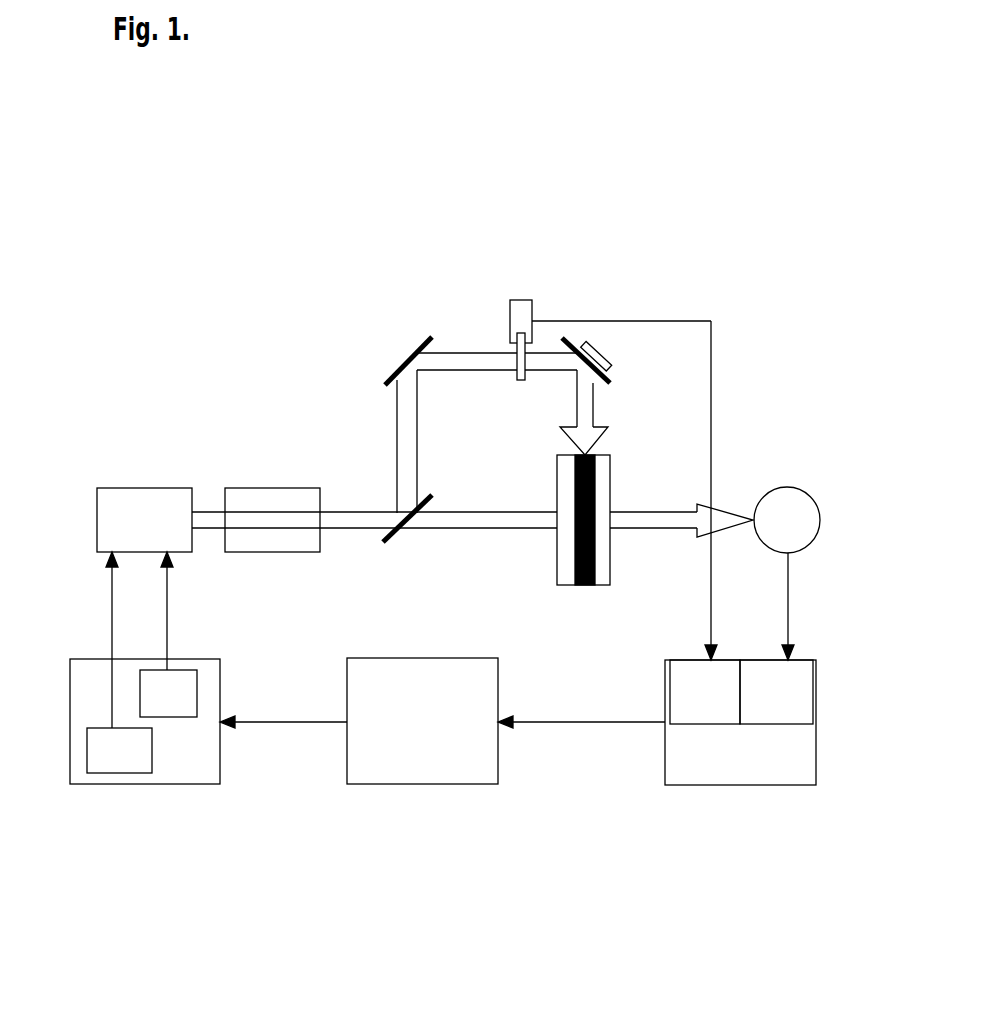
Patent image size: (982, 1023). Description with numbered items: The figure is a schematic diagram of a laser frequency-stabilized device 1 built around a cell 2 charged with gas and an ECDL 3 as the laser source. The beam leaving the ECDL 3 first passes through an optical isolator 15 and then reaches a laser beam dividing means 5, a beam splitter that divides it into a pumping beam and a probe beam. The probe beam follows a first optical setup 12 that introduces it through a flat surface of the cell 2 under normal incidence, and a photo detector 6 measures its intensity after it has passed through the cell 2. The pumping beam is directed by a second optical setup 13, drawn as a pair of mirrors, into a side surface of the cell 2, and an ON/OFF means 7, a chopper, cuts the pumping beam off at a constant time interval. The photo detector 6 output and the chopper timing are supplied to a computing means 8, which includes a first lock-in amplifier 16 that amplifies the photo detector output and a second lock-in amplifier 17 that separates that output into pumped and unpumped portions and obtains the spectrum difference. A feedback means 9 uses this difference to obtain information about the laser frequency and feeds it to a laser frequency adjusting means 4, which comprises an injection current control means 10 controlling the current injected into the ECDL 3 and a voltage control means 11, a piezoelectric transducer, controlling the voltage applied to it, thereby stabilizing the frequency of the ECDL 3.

The laser frequency-stabilized device 1 is at (500, 202).
The cell 2 is at (565, 585).
The ECDL 3 is at (145, 488).
The laser frequency adjusting means 4 is at (129, 717).
The laser beam dividing means 5 is at (385, 542).
The photo detector 6 is at (810, 493).
The ON/OFF means 7 is at (523, 300).
The computing means 8 is at (743, 768).
The feedback means 9 is at (422, 784).
The injection current control means 10 is at (98, 728).
The voltage control means 11 is at (180, 667).
The first optical setup 12 is at (478, 530).
The second optical setup 13 is at (408, 350).
The optical isolator 15 is at (273, 488).
The first lock-in amplifier 16 is at (813, 690).
The second lock-in amplifier 17 is at (668, 680).